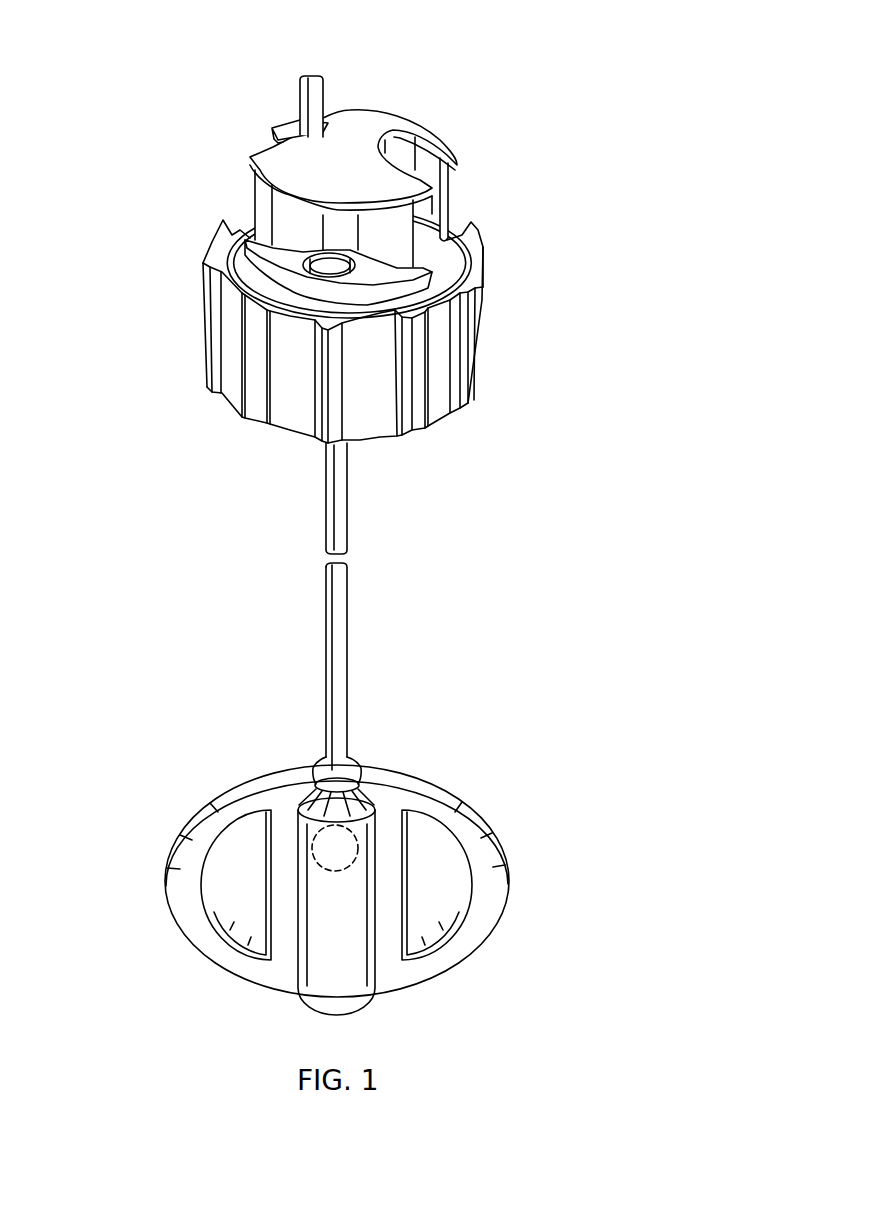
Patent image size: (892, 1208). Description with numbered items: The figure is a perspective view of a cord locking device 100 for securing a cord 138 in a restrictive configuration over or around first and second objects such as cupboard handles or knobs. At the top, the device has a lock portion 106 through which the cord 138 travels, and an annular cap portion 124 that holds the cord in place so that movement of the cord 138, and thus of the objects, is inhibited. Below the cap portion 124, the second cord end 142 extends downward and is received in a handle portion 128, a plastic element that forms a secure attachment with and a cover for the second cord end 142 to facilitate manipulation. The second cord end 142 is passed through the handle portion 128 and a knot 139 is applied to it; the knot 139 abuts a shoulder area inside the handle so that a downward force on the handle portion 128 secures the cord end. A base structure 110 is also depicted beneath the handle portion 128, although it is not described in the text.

The cord locking device 100 is at (80, 33).
The lock portion 106 is at (441, 94).
The cap portion 124 is at (205, 299).
The cord 138 is at (340, 506).
The second cord end 142 is at (325, 632).
The base member 110 is at (226, 785).
The handle portion 128 is at (165, 877).
The knot 139 is at (380, 818).